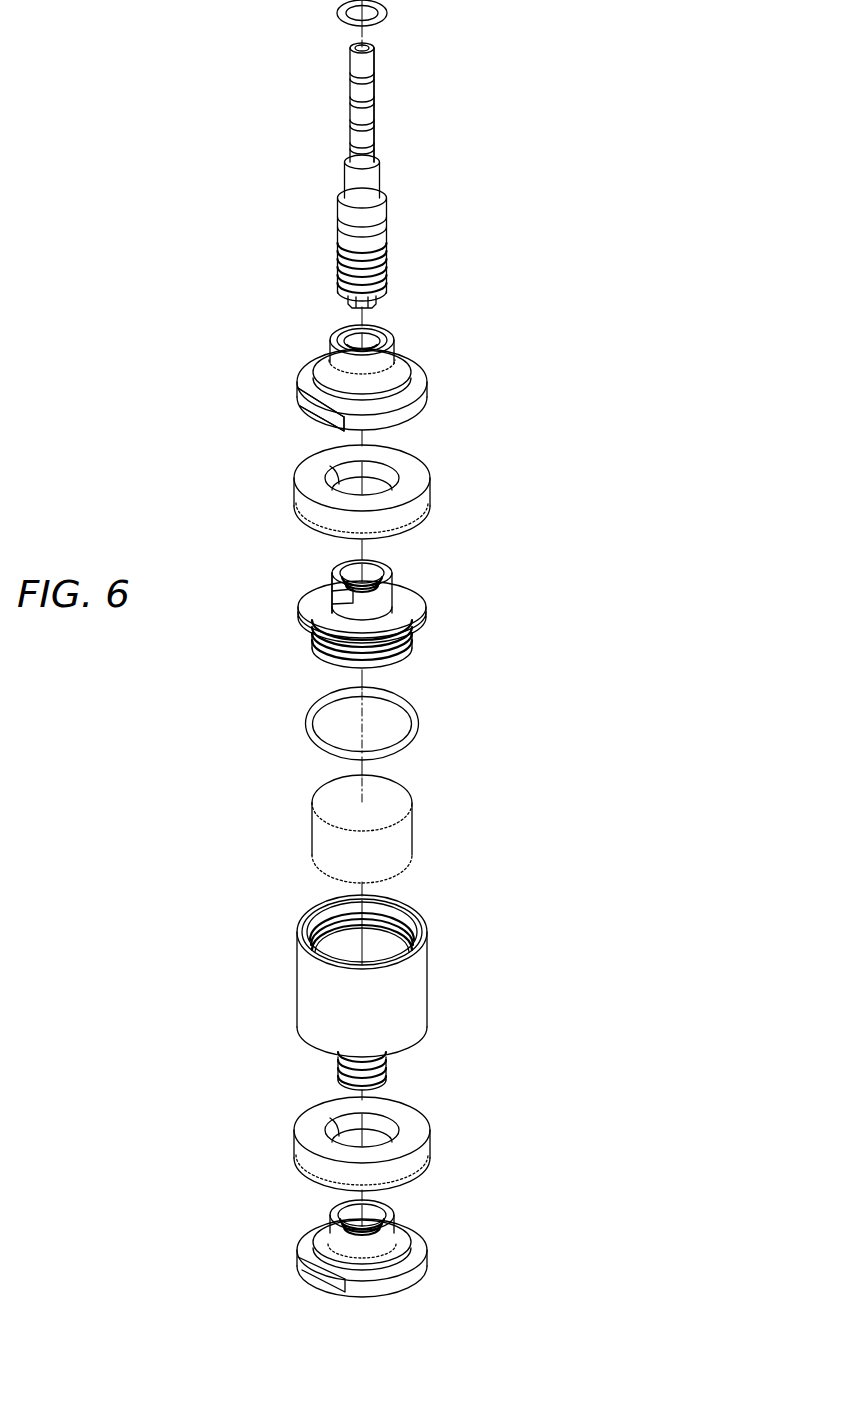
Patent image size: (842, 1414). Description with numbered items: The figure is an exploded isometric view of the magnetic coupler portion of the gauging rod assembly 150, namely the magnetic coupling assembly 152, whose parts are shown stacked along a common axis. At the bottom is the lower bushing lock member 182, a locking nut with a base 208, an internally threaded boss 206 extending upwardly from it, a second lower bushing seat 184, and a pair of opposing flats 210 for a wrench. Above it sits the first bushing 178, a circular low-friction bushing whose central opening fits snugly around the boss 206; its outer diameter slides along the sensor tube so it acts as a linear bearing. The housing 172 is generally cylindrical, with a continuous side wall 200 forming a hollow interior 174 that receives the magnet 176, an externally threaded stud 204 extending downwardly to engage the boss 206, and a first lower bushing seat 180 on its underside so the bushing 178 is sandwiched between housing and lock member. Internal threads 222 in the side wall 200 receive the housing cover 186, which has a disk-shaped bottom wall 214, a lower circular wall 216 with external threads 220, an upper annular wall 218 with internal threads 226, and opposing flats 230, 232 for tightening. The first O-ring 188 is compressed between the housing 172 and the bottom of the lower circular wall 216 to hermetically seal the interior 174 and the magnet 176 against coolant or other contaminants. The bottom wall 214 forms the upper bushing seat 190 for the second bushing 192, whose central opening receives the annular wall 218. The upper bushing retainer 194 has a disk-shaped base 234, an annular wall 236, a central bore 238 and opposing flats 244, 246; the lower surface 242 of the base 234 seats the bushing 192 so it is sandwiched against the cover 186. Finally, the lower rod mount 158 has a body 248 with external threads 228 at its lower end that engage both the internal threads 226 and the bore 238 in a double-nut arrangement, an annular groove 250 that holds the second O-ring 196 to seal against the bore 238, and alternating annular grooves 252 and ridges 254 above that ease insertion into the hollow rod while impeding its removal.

The gauging rod assembly 150 is at (145, 297).
The magnetic coupling assembly 152 is at (125, 916).
The lower rod mount 158 is at (373, 178).
The housing 172 is at (355, 987).
The hollow interior 174 is at (394, 913).
The magnet 176 is at (403, 832).
The first bushing 178 is at (420, 1143).
The first lower bushing seat 180 is at (310, 1050).
The lower bushing lock member 182 is at (374, 1231).
The second lower bushing seat 184 is at (320, 1238).
The housing cover 186 is at (359, 599).
The first O-ring 188 is at (417, 723).
The upper bushing seat 190 is at (320, 603).
The second bushing 192 is at (425, 490).
The upper bushing retainer 194 is at (379, 368).
The second O-ring 196 is at (387, 13).
The continuous side wall 200 is at (300, 928).
The externally threaded stud 204 is at (427, 1071).
The internally threaded boss 206 is at (341, 1210).
The base 208 is at (411, 1258).
The opposing flats 210 is at (412, 1220).
The disk-shaped bottom wall 214 is at (302, 620).
The lower circular wall 216 is at (410, 647).
The upper annular wall 218 is at (390, 597).
The external threads 220 is at (312, 647).
The internal threads 222 is at (338, 917).
The internal threads 226 is at (347, 562).
The external threads 228 is at (385, 263).
The opposing flat 230 is at (331, 577).
The opposing flat 232 is at (397, 566).
The disk-shaped base 234 is at (315, 335).
The annular wall 236 is at (390, 358).
The central bore 238 is at (372, 350).
The lower surface 242 is at (313, 413).
The opposing flat 244 is at (310, 402).
The opposing flat 246 is at (413, 357).
The body 248 is at (358, 157).
The annular groove 250 is at (340, 230).
The annular grooves 252 is at (372, 143).
The ridges 254 is at (348, 128).